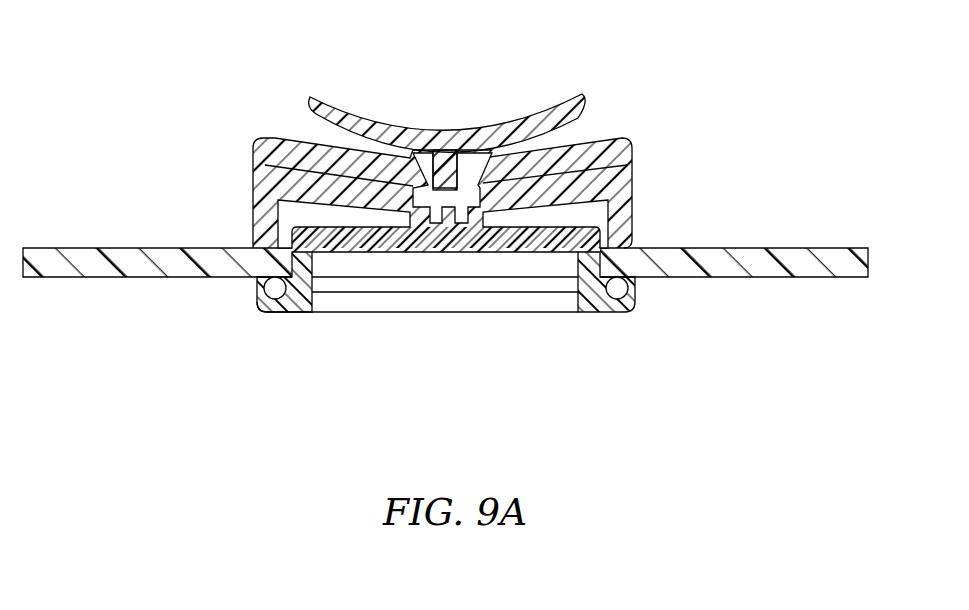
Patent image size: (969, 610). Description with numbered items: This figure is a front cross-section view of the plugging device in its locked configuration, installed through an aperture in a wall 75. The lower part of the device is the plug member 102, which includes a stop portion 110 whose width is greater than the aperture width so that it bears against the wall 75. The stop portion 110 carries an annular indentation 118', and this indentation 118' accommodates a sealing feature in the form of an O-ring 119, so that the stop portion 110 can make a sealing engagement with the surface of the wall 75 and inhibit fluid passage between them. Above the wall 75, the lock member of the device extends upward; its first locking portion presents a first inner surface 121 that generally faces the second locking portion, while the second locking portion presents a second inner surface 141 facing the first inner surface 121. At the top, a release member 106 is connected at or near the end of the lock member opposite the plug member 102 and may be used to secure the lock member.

The wall 75 is at (149, 279).
The plug member 102 is at (454, 199).
The release member 106 is at (365, 115).
The stop portion 110 is at (633, 278).
The indentation 118' is at (415, 326).
The O-ring 119 is at (276, 289).
The first inner surface 121 is at (300, 168).
The second inner surface 141 is at (300, 168).